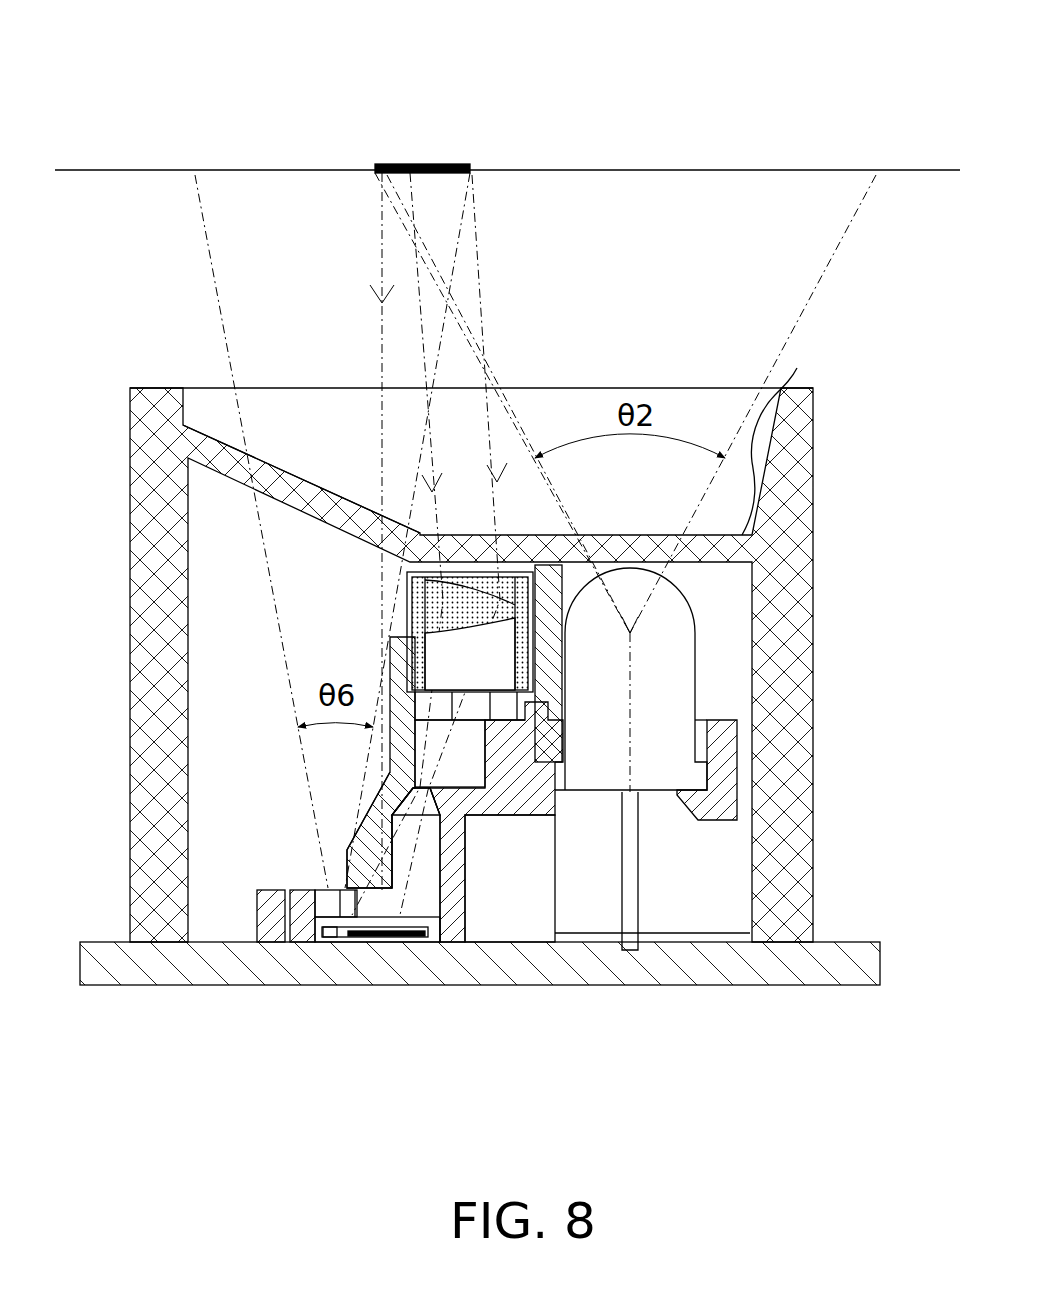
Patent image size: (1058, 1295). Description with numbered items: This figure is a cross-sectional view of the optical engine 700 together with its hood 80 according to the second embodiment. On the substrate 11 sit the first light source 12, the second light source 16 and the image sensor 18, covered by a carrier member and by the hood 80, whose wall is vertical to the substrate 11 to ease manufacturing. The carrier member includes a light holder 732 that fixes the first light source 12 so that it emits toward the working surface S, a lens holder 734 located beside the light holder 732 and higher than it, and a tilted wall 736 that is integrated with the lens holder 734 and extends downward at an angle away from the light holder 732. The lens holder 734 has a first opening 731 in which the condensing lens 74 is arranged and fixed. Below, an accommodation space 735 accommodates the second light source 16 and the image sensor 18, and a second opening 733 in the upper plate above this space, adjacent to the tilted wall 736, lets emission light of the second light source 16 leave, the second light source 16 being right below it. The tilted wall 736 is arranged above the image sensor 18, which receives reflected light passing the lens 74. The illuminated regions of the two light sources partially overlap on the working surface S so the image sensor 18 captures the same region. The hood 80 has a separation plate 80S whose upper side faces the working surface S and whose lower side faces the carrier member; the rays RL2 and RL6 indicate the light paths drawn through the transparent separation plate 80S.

The optical engine 700 is at (128, 30).
The substrate 11 is at (838, 985).
The first light source 12 is at (668, 606).
The second light source 16 is at (336, 935).
The image sensor 18 is at (383, 936).
The lens 74 is at (420, 603).
The hood 80 is at (133, 467).
The separation plate 80S is at (803, 439).
The first opening 731 is at (413, 570).
The light holder 732 is at (735, 733).
The second opening 733 is at (331, 890).
The lens holder 734 is at (395, 752).
The accommodation space 735 is at (422, 903).
The tilted wall 736 is at (375, 818).
The working surface S is at (90, 171).
The light ray RL2 is at (450, 545).
The light receiving axis RL6 is at (343, 531).